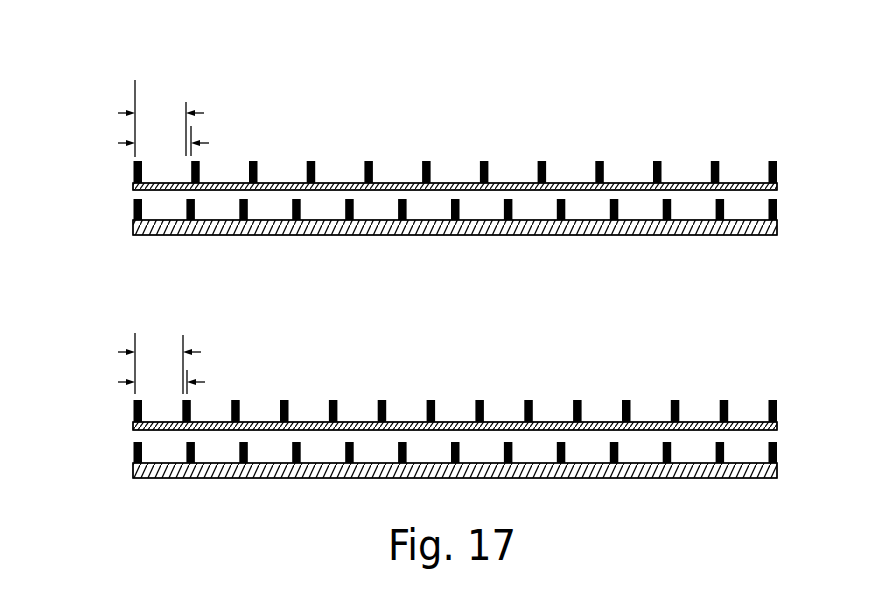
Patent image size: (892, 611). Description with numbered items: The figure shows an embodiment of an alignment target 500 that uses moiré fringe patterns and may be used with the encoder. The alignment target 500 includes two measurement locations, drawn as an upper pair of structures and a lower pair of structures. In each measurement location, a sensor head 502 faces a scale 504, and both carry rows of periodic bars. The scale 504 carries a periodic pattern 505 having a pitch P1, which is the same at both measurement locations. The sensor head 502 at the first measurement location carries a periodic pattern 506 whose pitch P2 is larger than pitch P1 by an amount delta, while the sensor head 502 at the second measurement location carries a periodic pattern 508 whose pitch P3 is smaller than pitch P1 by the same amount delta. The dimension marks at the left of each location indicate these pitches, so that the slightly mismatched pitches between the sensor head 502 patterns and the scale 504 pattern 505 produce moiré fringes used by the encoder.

The alignment target 500 is at (416, 137).
The sensor head 502 is at (445, 183).
The scale 504 is at (427, 234).
The periodic pattern on scale 505 is at (416, 230).
The periodic pattern 506 is at (456, 142).
The periodic pattern 508 is at (416, 415).